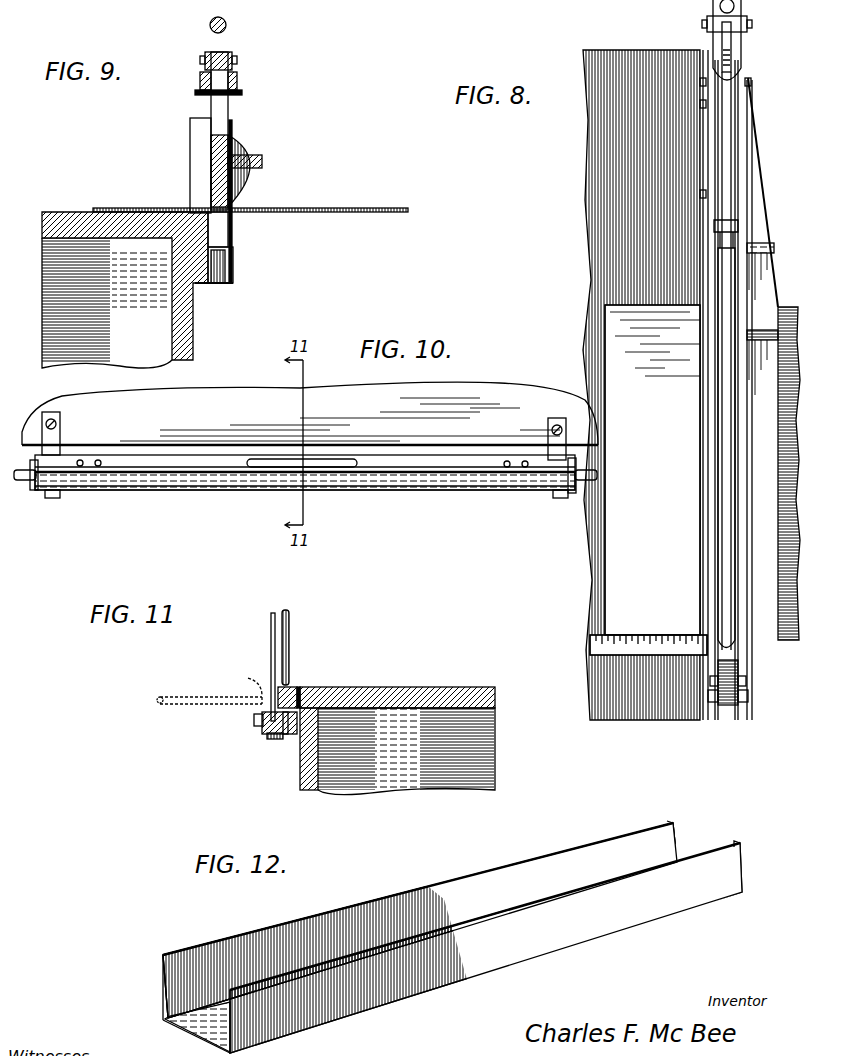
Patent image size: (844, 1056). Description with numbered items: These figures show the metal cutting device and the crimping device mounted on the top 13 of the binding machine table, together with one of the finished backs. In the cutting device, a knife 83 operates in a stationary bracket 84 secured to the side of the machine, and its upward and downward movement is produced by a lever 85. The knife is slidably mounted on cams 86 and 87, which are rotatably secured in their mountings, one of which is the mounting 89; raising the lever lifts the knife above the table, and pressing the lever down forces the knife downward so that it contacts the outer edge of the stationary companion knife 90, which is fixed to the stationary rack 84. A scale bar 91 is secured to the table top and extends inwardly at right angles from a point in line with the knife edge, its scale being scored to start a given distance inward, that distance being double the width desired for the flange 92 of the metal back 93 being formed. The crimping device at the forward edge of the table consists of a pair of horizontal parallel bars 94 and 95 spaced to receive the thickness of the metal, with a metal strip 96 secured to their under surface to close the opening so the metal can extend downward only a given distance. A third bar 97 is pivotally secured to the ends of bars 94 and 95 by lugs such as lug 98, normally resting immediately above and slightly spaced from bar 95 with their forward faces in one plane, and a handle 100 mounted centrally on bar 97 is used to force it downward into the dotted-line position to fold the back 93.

In FIG. 9, the top 13 is at (76, 211).
In FIG. 10, the top 13 is at (225, 399).
In FIG. 8, the top 13 is at (592, 170).
In FIG. 11, the top 13 is at (428, 686).
In FIG. 9, the knife 83 is at (247, 188).
In FIG. 9, the stationary bracket 84 is at (205, 263).
In FIG. 9, the lever 85 is at (227, 25).
In FIG. 8, the lever 85 is at (718, 332).
In FIG. 8, the cam 86 is at (730, 708).
In FIG. 9, the cam 87 is at (222, 103).
In FIG. 8, the cam 87 is at (733, 58).
In FIG. 9, the mounting 89 is at (225, 256).
In FIG. 9, the stationary companion knife 90 is at (212, 227).
In FIG. 8, the scale bar 91 is at (660, 640).
In FIG. 12, the flange 92 is at (452, 937).
In FIG. 8, the metal back 93 is at (652, 470).
In FIG. 11, the metal back 93 is at (270, 633).
In FIG. 12, the metal back 93 is at (206, 1026).
In FIG. 10, the parallel bar 94 is at (478, 483).
In FIG. 11, the parallel bar 94 is at (262, 731).
In FIG. 11, the parallel bar 95 is at (290, 737).
In FIG. 11, the metal strip 96 is at (271, 740).
In FIG. 10, the third bar 97 is at (435, 466).
In FIG. 11, the third bar 97 is at (301, 690).
In FIG. 11, the lug 98 is at (254, 720).
In FIG. 10, the handle 100 is at (338, 468).
In FIG. 11, the handle 100 is at (292, 633).